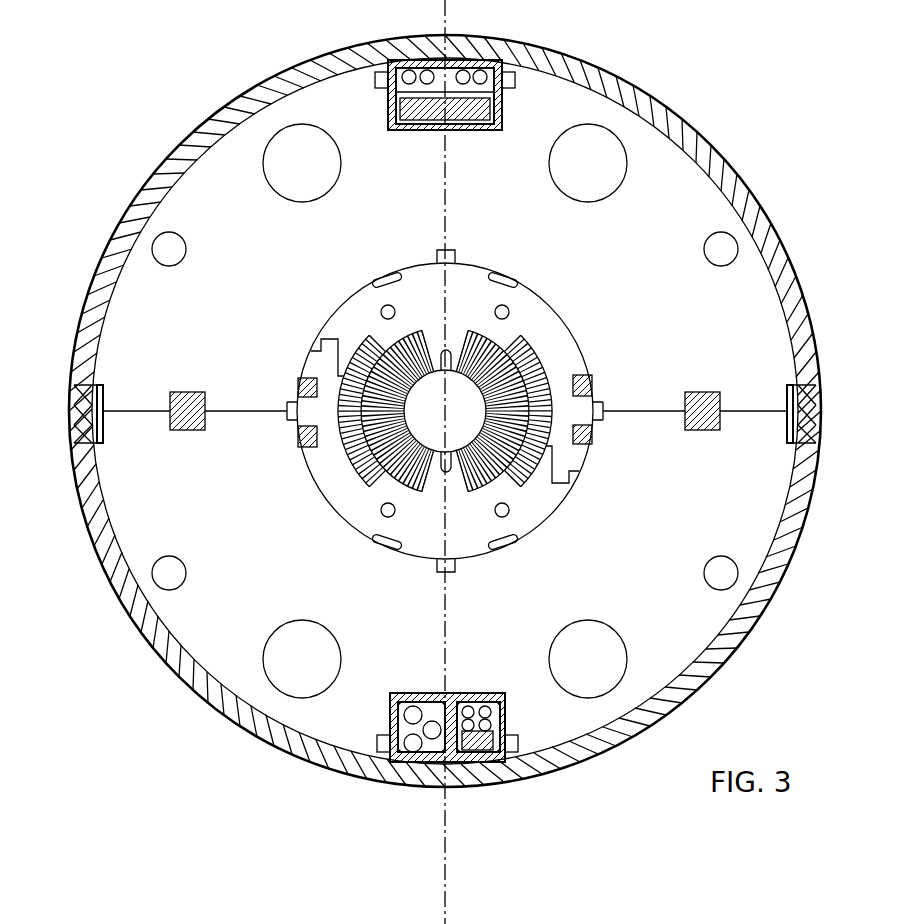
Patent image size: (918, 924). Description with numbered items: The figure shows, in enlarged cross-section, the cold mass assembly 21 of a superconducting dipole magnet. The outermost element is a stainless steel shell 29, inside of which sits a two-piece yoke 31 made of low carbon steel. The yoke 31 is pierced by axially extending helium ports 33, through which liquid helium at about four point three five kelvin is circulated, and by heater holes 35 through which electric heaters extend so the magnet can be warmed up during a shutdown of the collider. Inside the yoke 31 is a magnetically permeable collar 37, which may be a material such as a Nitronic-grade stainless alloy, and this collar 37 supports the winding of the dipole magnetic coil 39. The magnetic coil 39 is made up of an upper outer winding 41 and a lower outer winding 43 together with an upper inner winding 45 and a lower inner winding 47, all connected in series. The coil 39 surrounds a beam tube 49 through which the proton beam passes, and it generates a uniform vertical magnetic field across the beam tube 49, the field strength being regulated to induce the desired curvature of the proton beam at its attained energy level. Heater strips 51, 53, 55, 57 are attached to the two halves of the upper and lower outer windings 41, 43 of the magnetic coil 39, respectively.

The cold mass assembly 21 is at (575, 22).
The stainless steel shell 29 is at (612, 68).
The two-piece yoke 31 is at (228, 578).
The helium ports 33 is at (287, 128).
The heater holes 35 is at (153, 243).
The collar 37 is at (302, 460).
The dipole magnetic coil 39 is at (510, 325).
The upper outer winding 41 is at (395, 332).
The lower outer winding 43 is at (345, 462).
The upper inner winding 45 is at (441, 350).
The lower inner winding 47 is at (442, 522).
The beam tube 49 is at (458, 523).
The heater strip 51 is at (365, 337).
The heater strip 53 is at (538, 360).
The heater strip 55 is at (330, 465).
The heater strip 57 is at (521, 487).